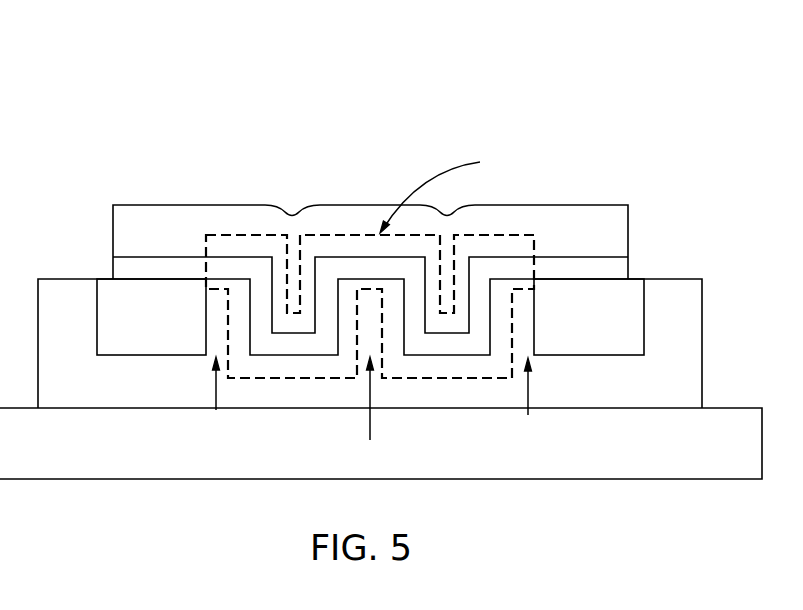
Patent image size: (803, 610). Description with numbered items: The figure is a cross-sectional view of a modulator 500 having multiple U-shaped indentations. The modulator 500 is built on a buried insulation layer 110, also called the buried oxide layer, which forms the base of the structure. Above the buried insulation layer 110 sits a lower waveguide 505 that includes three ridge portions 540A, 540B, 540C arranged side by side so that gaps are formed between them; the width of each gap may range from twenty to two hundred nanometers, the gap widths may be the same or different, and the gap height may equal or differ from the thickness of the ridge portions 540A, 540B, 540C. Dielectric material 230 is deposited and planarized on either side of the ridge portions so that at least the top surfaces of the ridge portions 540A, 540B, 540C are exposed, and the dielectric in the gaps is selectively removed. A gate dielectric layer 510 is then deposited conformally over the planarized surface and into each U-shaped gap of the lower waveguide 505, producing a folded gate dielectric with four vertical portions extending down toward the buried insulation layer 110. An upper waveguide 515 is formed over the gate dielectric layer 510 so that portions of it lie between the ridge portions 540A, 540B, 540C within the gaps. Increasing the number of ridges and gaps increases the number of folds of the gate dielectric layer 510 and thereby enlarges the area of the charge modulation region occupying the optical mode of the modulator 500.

The modulator 500 is at (581, 95).
The upper waveguide 515 is at (628, 221).
The gate dielectric layer 510 is at (628, 261).
The lower waveguide 505 is at (702, 347).
The dielectric material 230 is at (171, 327).
The buried insulation layer 110 is at (726, 452).
The ridge portion 540A is at (216, 410).
The ridge portion 540B is at (370, 440).
The ridge portion 540C is at (528, 415).